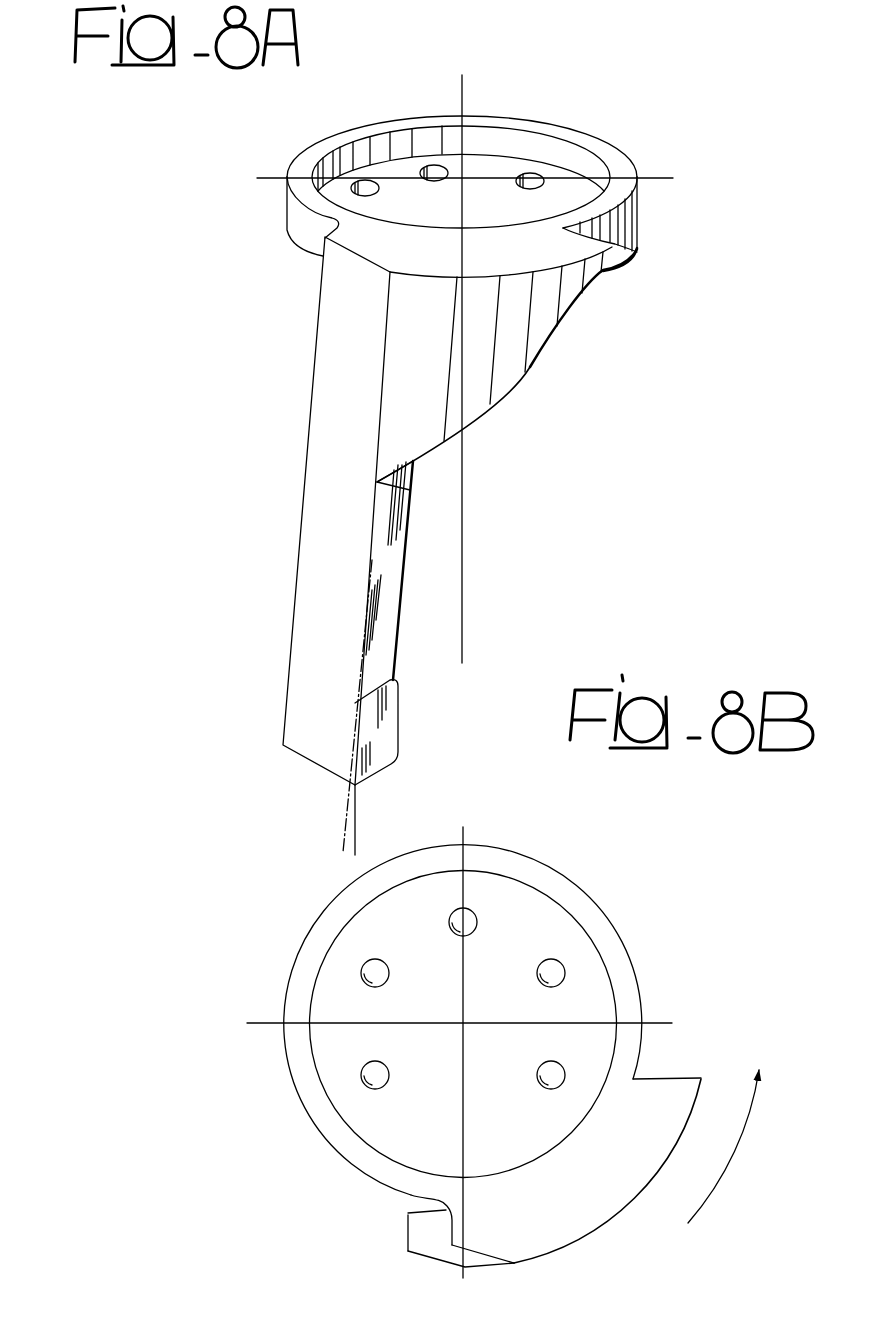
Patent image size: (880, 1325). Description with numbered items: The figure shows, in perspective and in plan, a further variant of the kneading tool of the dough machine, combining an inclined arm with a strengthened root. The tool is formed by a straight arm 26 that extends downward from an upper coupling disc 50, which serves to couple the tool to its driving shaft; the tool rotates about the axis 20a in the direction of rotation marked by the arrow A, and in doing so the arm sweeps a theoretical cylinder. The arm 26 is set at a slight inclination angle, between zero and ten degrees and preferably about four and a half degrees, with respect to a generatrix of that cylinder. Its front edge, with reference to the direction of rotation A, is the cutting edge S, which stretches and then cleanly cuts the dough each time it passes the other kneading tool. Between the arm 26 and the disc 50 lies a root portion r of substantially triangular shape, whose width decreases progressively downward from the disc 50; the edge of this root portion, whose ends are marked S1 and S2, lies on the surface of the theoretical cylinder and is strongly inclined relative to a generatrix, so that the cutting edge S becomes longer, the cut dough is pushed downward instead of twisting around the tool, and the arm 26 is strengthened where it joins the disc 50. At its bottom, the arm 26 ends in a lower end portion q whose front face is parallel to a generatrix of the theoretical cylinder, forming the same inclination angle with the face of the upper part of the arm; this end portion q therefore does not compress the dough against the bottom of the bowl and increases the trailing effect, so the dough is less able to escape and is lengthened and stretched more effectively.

In FIG. 8A, the coupling disc 50 is at (652, 136).
In FIG. 8B, the coupling disc 50 is at (590, 913).
In FIG. 8A, the kneading tool arm 26 is at (268, 584).
In FIG. 8B, the kneading tool arm 26 is at (383, 1230).
In FIG. 8A, the axis of rotation 20a is at (463, 553).
In FIG. 8A, the cutting edge S is at (372, 565).
In FIG. 8A, the first end of root portion edge S1 is at (640, 250).
In FIG. 8B, the first end of root portion edge S1 is at (707, 1074).
In FIG. 8A, the second end of root portion edge S2 is at (410, 489).
In FIG. 8B, the second end of root portion edge S2 is at (520, 1266).
In FIG. 8A, the root portion r is at (552, 328).
In FIG. 8B, the root portion r is at (626, 1174).
In FIG. 8A, the lower end portion q is at (399, 684).
In FIG. 8B, the direction of rotation A is at (723, 1146).